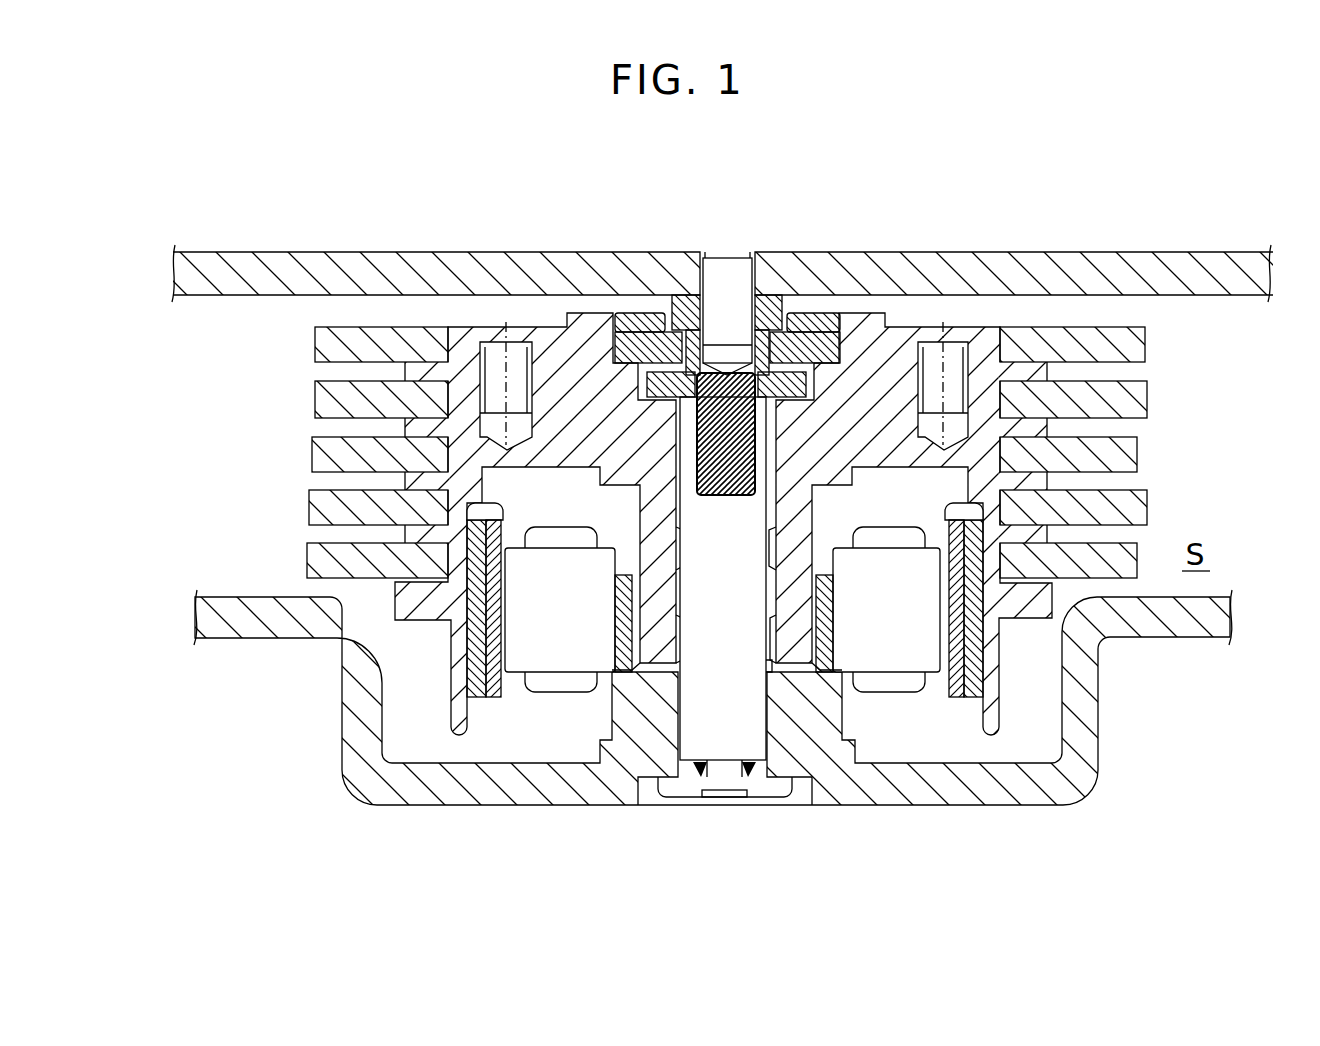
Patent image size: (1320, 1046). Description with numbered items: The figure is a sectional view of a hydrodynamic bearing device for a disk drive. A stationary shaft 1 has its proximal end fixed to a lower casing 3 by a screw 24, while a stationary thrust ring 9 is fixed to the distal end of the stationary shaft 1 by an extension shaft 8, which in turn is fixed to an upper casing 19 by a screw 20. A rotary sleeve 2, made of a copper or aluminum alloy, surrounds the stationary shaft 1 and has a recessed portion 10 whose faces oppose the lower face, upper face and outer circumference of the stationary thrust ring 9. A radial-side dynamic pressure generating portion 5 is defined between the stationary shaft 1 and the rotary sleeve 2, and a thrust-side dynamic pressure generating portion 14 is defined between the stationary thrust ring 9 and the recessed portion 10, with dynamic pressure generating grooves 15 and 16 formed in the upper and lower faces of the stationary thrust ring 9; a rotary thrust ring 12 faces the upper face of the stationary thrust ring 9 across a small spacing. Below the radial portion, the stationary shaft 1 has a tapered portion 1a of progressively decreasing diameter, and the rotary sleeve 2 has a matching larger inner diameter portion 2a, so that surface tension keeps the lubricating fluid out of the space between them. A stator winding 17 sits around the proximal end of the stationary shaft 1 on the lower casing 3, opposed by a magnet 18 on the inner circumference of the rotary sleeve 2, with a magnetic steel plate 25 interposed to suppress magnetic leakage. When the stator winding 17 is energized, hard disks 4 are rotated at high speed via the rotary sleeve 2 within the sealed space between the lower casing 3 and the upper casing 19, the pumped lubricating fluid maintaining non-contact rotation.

The stationary shaft 1 is at (733, 727).
The tapered portion 1a is at (773, 667).
The rotary sleeve 2 is at (985, 335).
The larger inner diameter portion 2a is at (673, 667).
The lower casing 3 is at (1088, 762).
The hard disks 4 is at (1147, 397).
The radial-side dynamic pressure generating portion 5 is at (790, 700).
The extension shaft 8 is at (685, 300).
The stationary thrust ring 9 is at (828, 384).
The recessed portion 10 is at (644, 411).
The rotary thrust ring 12 is at (840, 372).
The thrust-side dynamic pressure generating portion 14 is at (818, 322).
The dynamic pressure generating grooves 15 is at (650, 322).
The dynamic pressure generating grooves 16 is at (647, 418).
The stator winding 17 is at (567, 655).
The magnet 18 is at (490, 698).
The upper casing 19 is at (1013, 257).
The screw 20 is at (736, 290).
The screw 24 is at (688, 794).
The magnetic steel plate 25 is at (476, 700).